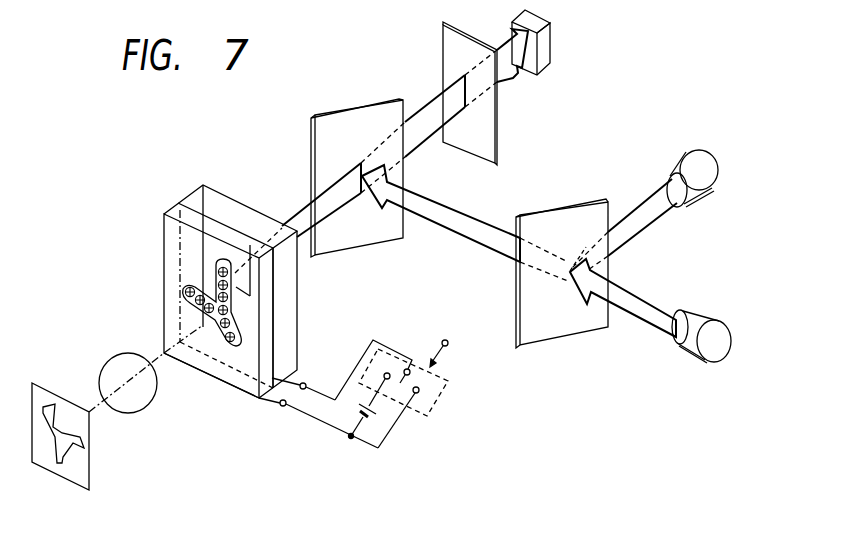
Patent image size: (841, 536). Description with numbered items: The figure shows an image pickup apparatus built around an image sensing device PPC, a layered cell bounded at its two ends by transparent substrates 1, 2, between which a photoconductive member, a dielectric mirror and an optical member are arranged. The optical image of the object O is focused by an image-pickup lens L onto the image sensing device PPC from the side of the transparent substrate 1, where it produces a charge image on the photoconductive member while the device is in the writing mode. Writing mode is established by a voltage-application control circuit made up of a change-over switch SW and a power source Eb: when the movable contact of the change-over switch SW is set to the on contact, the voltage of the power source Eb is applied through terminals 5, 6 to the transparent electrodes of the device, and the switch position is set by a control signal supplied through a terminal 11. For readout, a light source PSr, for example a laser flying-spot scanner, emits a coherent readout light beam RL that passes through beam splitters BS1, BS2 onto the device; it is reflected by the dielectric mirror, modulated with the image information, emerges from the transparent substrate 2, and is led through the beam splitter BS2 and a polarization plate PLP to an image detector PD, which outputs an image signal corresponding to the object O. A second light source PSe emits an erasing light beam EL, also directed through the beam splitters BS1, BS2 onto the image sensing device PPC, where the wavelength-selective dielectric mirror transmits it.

The transparent substrate 1 is at (222, 375).
The transparent substrate 2 is at (300, 303).
The terminal 5 is at (280, 404).
The terminal 6 is at (306, 383).
The terminal 11 is at (448, 342).
The image sensing device PPC is at (191, 182).
The object O is at (39, 388).
The image-pickup lens L is at (115, 360).
The beam splitter BS1 is at (540, 222).
The beam splitter BS2 is at (350, 115).
The polarization plate PLP is at (447, 43).
The image detector PD is at (550, 32).
The light source PSe is at (693, 158).
The light source PSr is at (707, 325).
The erasing light beam EL is at (632, 204).
The readout light beam RL is at (625, 323).
The change-over switch SW is at (400, 383).
The power source Eb is at (352, 407).